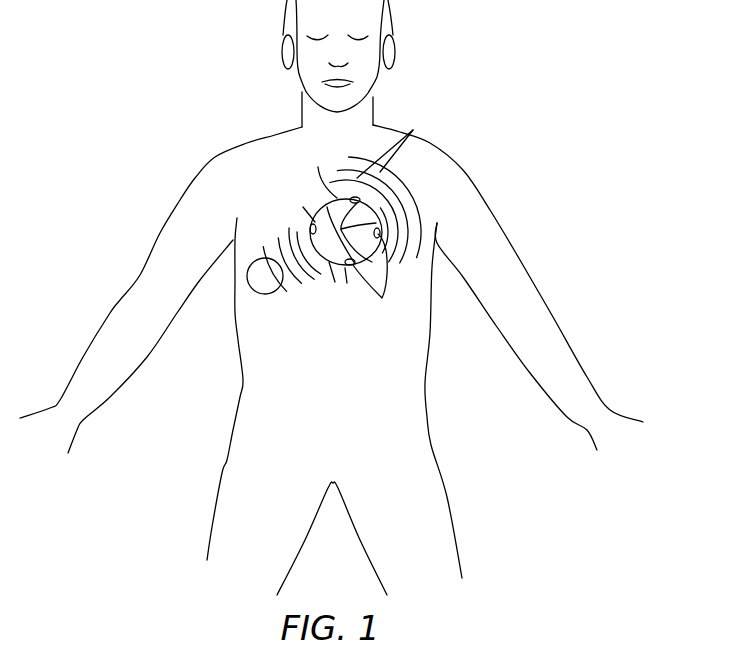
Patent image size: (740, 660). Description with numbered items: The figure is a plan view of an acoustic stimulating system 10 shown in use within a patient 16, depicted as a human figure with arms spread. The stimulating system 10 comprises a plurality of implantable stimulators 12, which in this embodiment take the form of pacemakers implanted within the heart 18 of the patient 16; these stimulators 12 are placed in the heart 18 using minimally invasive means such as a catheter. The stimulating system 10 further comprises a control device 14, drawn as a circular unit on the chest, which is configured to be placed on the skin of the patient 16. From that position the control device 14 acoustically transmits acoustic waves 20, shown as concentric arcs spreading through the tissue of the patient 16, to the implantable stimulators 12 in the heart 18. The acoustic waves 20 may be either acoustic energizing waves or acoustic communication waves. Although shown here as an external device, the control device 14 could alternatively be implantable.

The acoustic stimulating system 10 is at (252, 326).
The implantable stimulators 12 is at (312, 227).
The control device 14 is at (253, 289).
The patient 16 is at (427, 363).
The heart 18 is at (321, 170).
The acoustic waves 20 is at (392, 142).